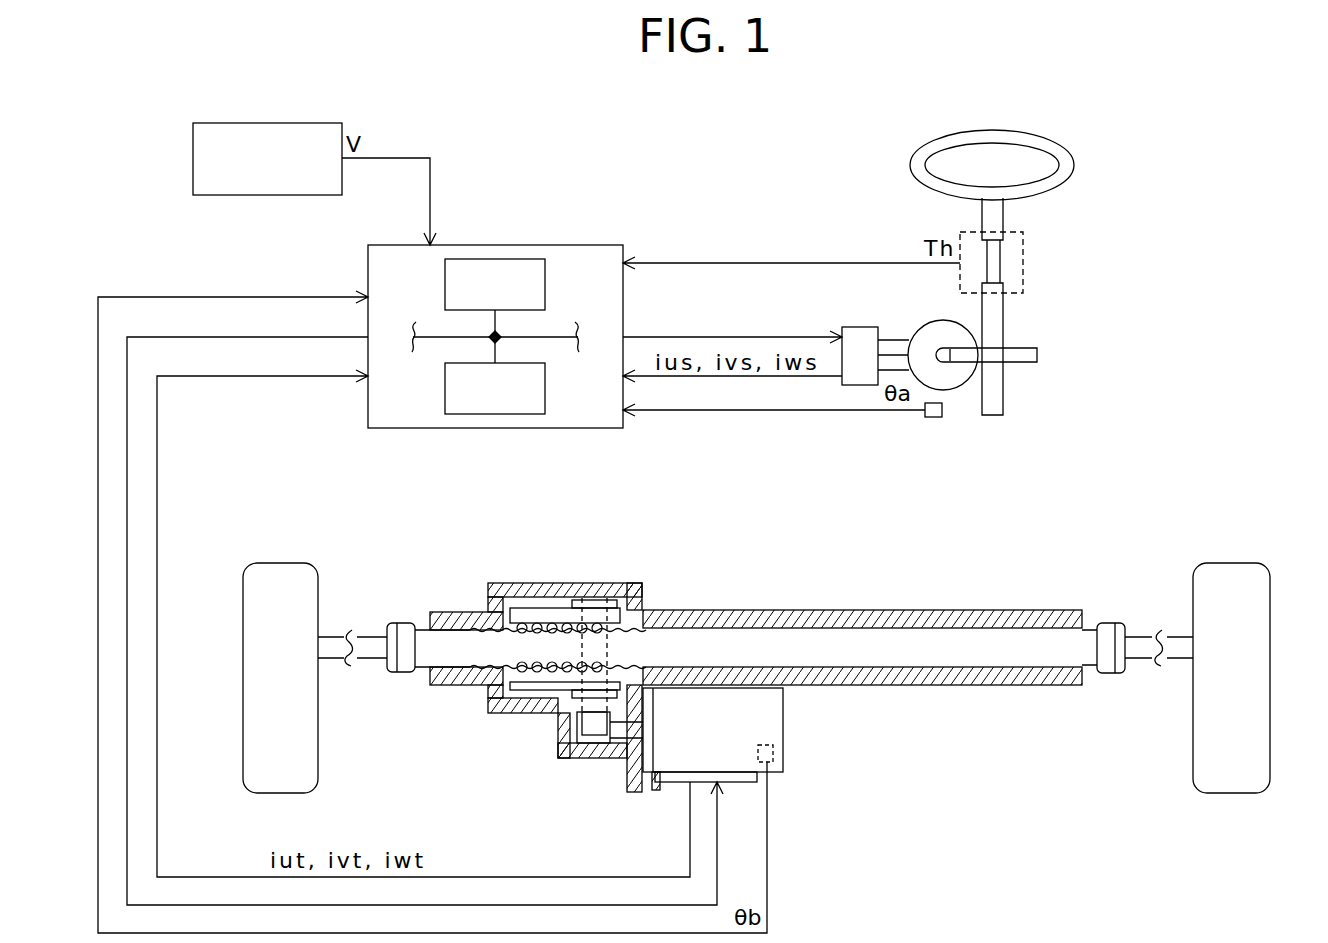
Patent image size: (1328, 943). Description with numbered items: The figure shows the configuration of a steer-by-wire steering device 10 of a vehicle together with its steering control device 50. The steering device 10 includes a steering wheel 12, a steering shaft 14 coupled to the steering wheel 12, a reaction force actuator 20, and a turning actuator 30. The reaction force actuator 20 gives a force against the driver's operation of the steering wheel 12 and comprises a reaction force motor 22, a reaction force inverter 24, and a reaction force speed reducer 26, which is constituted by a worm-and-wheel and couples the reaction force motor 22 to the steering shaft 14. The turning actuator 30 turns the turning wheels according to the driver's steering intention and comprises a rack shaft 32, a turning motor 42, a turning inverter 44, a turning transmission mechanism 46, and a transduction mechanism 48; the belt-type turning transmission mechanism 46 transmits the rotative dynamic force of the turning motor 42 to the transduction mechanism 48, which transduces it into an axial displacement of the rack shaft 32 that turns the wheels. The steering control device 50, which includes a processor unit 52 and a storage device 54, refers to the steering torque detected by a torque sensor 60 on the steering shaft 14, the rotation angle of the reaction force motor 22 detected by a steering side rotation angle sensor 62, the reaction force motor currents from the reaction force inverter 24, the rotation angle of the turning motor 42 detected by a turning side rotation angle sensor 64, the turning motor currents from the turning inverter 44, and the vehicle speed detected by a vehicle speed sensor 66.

The steering device 10 is at (1246, 233).
The steering wheel 12 is at (1042, 138).
The steering shaft 14 is at (1004, 324).
The reaction force actuator 20 is at (1050, 406).
The reaction force motor 22 is at (930, 326).
The reaction force inverter 24 is at (859, 327).
The reaction force speed reducer 26 is at (972, 369).
The turning actuator 30 is at (1156, 550).
The rack shaft 32 is at (740, 612).
The turning motor 42 is at (785, 718).
The turning inverter 44 is at (672, 784).
The turning transmission mechanism 46 is at (582, 752).
The transduction mechanism 48 is at (512, 704).
The steering control device 50 is at (564, 244).
The processor unit 52 is at (547, 290).
The storage device 54 is at (547, 392).
The torque sensor 60 is at (1024, 234).
The steering side rotation angle sensor 62 is at (930, 418).
The turning side rotation angle sensor 64 is at (762, 745).
The vehicle speed sensor 66 is at (272, 123).